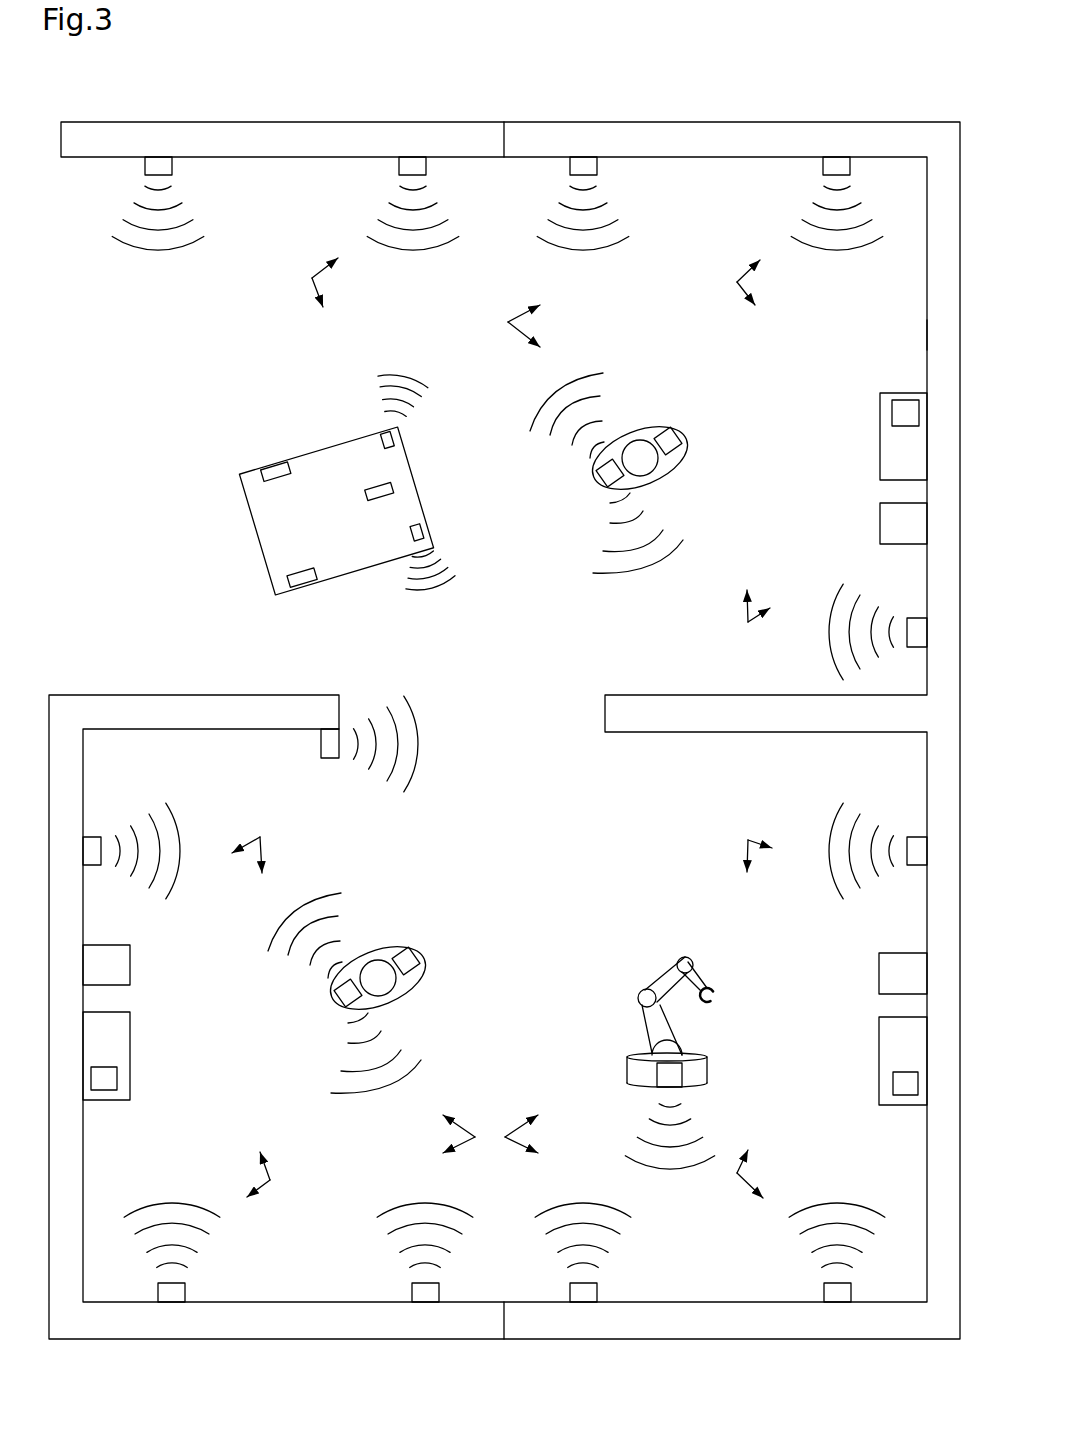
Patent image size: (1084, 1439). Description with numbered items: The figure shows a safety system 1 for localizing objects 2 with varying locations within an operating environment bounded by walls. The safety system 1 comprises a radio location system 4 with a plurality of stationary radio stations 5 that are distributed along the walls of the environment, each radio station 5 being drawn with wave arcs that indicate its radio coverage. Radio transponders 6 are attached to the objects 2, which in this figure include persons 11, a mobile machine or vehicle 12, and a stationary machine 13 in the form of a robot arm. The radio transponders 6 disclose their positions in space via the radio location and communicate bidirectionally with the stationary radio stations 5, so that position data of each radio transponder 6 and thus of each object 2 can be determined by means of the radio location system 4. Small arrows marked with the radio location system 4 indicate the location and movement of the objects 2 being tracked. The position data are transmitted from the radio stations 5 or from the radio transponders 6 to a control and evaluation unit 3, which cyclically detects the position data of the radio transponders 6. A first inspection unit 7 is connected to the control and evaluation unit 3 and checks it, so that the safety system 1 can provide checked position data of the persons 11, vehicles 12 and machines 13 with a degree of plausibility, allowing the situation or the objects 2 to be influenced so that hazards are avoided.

The safety system 1 is at (790, 82).
The object 2 is at (312, 451).
The control and evaluation unit 3 is at (915, 393).
The radio location system 4 is at (502, 728).
The radio station 5 is at (150, 167).
The radio transponder 6 is at (388, 435).
The first inspection unit 7 is at (880, 520).
The person 11 is at (927, 335).
The mobile machine 12 is at (341, 581).
The machine 13 is at (638, 955).